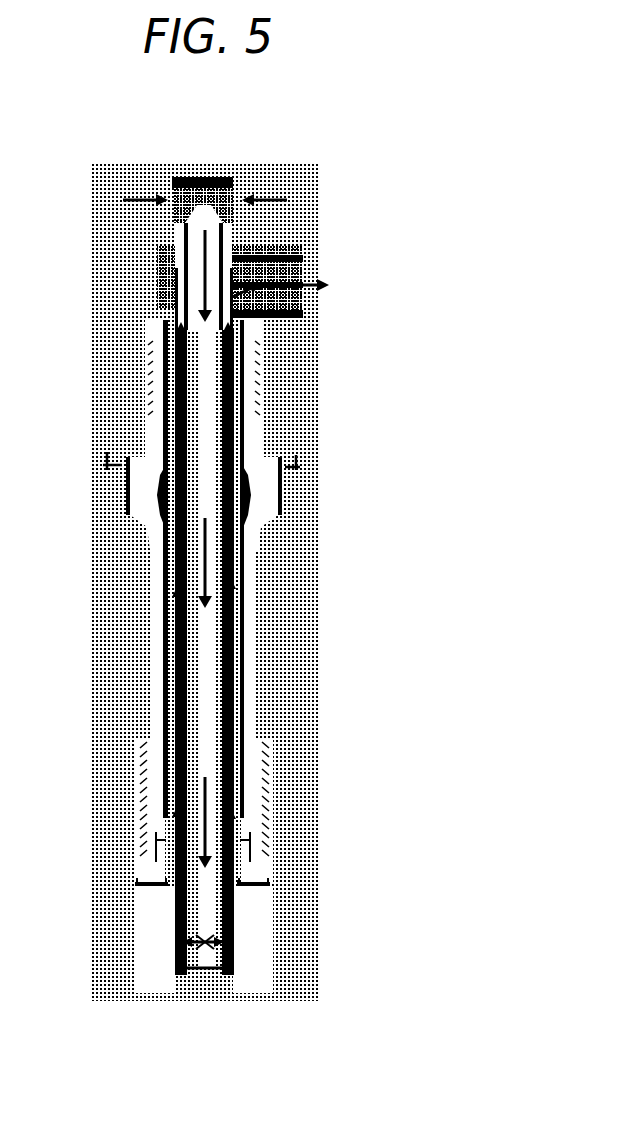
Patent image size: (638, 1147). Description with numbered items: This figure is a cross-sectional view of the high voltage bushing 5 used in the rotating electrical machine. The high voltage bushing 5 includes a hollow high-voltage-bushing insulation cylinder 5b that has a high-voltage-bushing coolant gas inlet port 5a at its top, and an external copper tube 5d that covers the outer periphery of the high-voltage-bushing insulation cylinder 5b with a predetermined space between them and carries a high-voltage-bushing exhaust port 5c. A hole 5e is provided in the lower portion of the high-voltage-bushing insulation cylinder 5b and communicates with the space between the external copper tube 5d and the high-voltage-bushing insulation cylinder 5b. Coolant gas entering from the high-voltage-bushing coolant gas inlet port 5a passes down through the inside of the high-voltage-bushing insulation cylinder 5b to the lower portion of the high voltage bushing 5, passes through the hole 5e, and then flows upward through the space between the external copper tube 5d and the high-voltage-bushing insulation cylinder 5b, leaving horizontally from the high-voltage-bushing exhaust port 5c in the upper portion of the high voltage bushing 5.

The high voltage bushing 5 is at (255, 563).
The high-voltage-bushing coolant gas inlet port 5a is at (222, 177).
The high-voltage-bushing insulation cylinder 5b is at (213, 630).
The high-voltage-bushing exhaust port 5c is at (303, 273).
The external copper tube 5d is at (233, 697).
The hole 5e is at (211, 953).